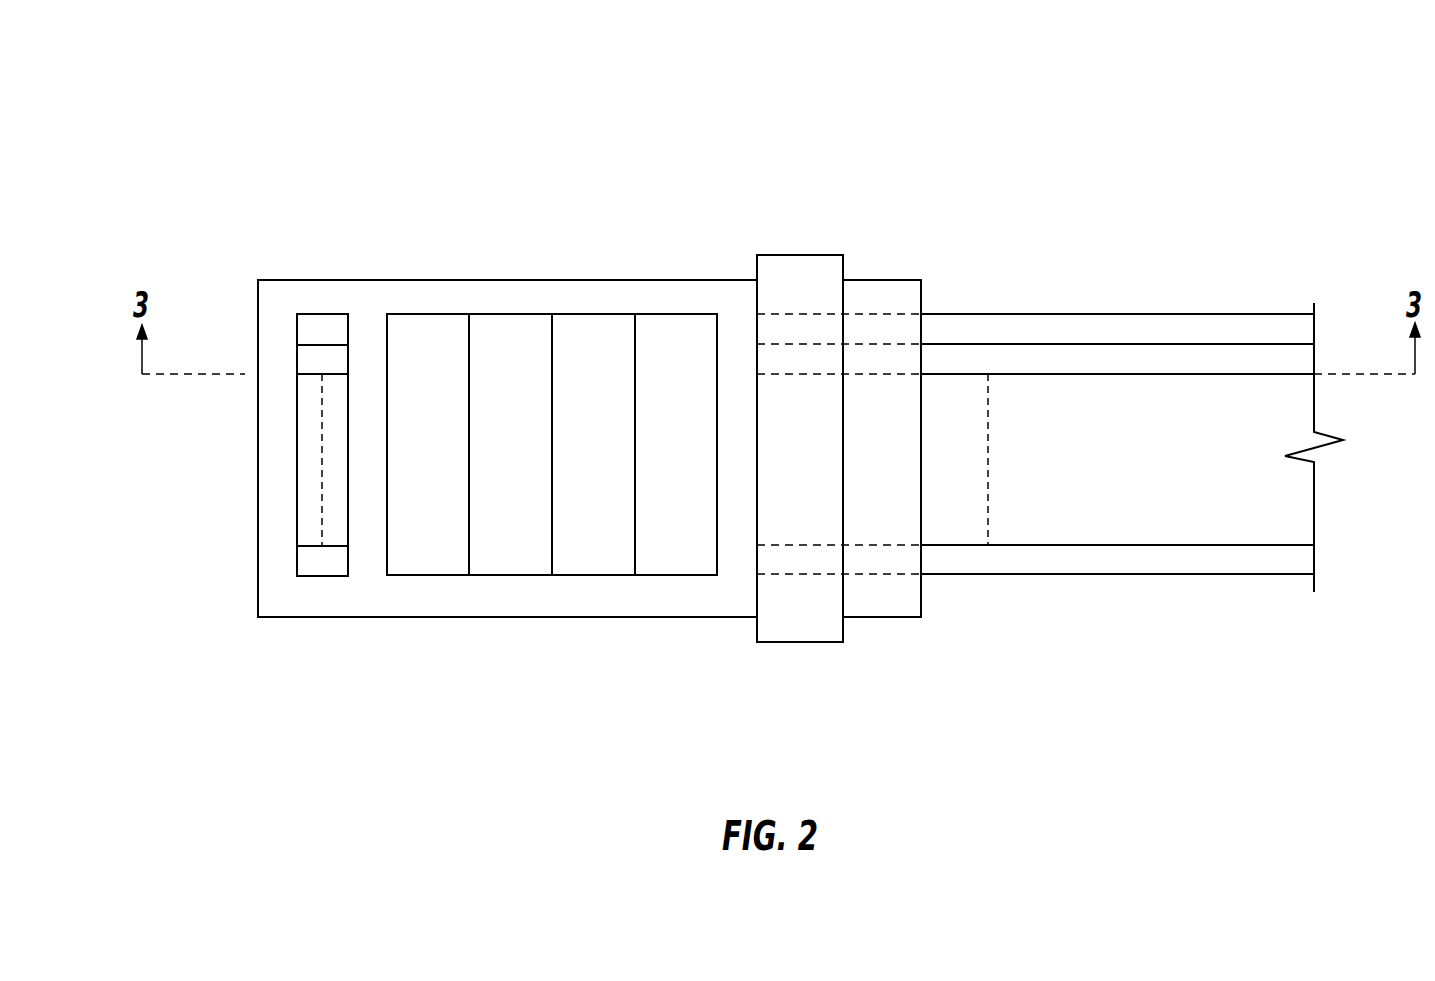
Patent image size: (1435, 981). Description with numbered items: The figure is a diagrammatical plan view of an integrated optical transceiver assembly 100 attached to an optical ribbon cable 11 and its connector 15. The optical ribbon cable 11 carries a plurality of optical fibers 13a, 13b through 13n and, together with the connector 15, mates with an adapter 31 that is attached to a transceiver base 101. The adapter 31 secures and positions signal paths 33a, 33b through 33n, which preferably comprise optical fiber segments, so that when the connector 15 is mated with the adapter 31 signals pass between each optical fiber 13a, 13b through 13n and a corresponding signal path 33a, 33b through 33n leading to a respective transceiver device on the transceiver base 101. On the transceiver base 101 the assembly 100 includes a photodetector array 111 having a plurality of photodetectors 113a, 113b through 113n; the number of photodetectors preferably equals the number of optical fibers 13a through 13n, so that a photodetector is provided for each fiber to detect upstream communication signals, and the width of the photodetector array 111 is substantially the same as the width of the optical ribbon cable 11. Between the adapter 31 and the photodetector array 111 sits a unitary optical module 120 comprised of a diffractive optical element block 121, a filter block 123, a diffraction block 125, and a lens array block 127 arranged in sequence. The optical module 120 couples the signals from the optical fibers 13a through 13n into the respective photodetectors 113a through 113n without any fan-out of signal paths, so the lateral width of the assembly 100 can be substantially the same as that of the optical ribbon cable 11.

The integrated optical transceiver assembly 100 is at (823, 138).
The transceiver base 101 is at (360, 280).
The photodetector array 111 is at (322, 577).
The photodetector 113a is at (308, 323).
The photodetector 113b is at (308, 367).
The photodetector 113n is at (305, 559).
The unitary optical module 120 is at (452, 303).
The diffractive optical element block 121 is at (432, 576).
The filter block 123 is at (530, 576).
The diffraction block 125 is at (573, 576).
The lens array block 127 is at (668, 576).
The adapter 31 is at (777, 260).
The connector 15 is at (921, 303).
The signal path 33a is at (790, 333).
The signal path 33b is at (803, 362).
The signal path 33n is at (788, 563).
The optical ribbon cable 11 is at (1058, 312).
The optical fiber 13a is at (1127, 326).
The optical fiber 13b is at (1220, 357).
The optical fiber 13n is at (1125, 560).